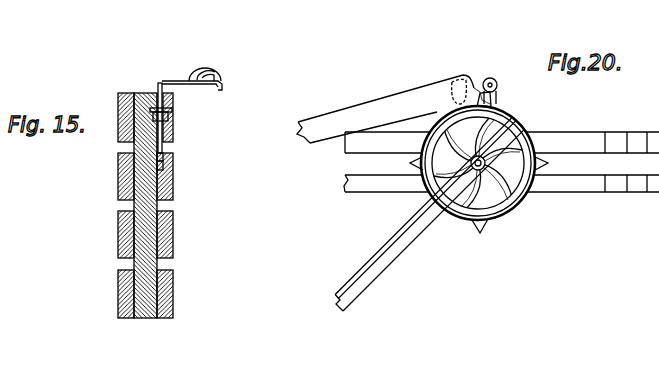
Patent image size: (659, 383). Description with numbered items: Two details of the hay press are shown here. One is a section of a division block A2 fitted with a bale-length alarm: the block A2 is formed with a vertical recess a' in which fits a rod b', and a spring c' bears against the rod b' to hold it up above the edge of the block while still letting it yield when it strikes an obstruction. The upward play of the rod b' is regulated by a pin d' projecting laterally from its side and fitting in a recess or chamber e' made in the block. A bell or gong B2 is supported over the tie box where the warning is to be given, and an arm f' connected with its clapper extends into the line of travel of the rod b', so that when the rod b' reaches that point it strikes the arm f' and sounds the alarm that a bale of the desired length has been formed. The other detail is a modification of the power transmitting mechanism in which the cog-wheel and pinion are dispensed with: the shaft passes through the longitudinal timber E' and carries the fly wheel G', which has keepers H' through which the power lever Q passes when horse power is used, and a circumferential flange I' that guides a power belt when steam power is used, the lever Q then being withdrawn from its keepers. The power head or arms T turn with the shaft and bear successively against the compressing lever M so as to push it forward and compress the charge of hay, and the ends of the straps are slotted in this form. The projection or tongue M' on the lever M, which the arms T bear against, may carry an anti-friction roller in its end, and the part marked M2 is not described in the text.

In FIG. 15, the division block A2 is at (118, 187).
In FIG. 15, the rod b' is at (152, 112).
In FIG. 15, the arm f' is at (192, 76).
In FIG. 15, the bell or gong B2 is at (212, 78).
In FIG. 15, the pin d' is at (174, 108).
In FIG. 15, the recess or chamber e' is at (179, 121).
In FIG. 15, the vertical recess a' is at (180, 152).
In FIG. 15, the spring c' is at (185, 166).
In FIG. 20, the longitudinal timber E' is at (501, 162).
In FIG. 20, the power head or arms T is at (492, 100).
In FIG. 20, the circumferential flange I' is at (478, 176).
In FIG. 20, the fly wheel G' is at (442, 205).
In FIG. 20, the power lever Q is at (368, 268).
In FIG. 20, the keepers H' is at (543, 124).
In FIG. 20, the compressing lever M is at (385, 109).
In FIG. 20, the lever end M2 is at (473, 78).
In FIG. 20, the projection M' is at (506, 87).